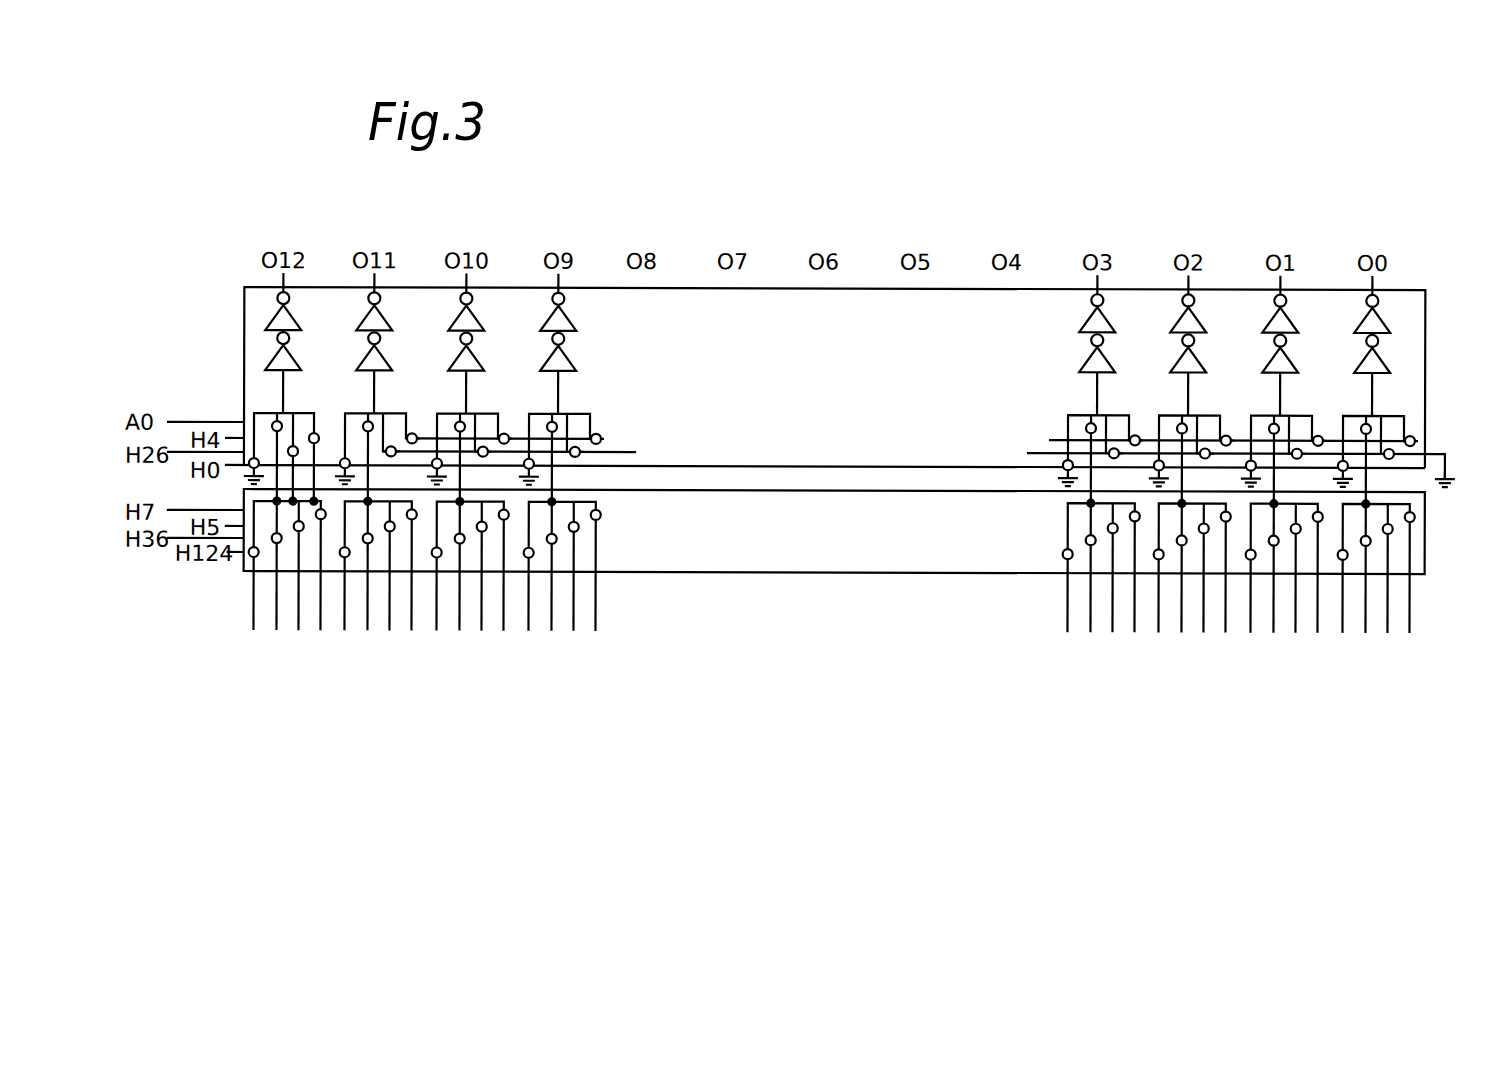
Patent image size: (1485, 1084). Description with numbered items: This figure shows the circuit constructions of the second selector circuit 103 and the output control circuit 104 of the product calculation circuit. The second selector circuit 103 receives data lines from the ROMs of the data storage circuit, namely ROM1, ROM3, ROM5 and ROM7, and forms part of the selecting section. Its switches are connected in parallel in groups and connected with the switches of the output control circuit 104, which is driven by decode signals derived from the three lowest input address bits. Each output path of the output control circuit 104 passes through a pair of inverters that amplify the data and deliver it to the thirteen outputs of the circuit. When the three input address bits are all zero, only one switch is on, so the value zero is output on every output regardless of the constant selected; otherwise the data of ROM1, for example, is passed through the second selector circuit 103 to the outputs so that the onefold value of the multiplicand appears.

The second selector circuit 103 is at (1425, 522).
The output control circuit 104 is at (1425, 376).
The element ROM1 is at (255, 637).
The element ROM3 is at (275, 640).
The element ROM5 is at (298, 640).
The element ROM7 is at (320, 640).